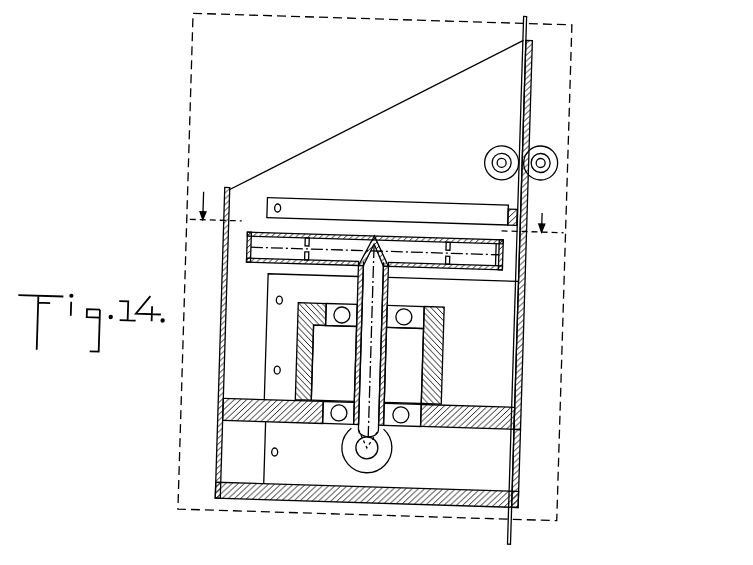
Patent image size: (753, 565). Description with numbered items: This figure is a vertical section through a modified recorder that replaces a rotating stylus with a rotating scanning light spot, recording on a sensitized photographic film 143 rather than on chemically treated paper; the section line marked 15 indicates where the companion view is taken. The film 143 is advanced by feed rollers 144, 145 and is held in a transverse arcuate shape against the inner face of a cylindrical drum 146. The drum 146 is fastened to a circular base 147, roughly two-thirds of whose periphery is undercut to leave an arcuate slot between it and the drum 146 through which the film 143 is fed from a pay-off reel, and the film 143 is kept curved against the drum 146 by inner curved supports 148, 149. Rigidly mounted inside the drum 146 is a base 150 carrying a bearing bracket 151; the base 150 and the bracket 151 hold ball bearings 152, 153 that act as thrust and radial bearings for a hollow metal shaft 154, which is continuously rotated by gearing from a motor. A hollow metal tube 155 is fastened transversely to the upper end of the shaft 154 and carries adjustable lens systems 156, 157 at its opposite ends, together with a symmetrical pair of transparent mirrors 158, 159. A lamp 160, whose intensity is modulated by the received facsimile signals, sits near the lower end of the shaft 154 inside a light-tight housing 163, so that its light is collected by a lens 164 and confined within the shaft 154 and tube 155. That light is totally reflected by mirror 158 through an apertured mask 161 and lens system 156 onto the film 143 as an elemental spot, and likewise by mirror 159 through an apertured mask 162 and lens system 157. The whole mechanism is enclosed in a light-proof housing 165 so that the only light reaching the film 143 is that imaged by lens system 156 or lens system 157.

The section line 15- 15 is at (377, 204).
The film 143 is at (520, 10).
The feed roller 144 is at (491, 146).
The feed roller 145 is at (552, 154).
The cylindrical drum 146 is at (525, 432).
The circular base 147 is at (318, 492).
The inner curved support 148 is at (512, 454).
The inner curved support 149 is at (503, 211).
The base 150 is at (476, 402).
The bearing bracket 151 is at (447, 350).
The ball bearing 152 is at (339, 424).
The ball bearing 153 is at (354, 304).
The hollow metal shaft 154 is at (366, 362).
The hollow metal tube 155 is at (334, 253).
The lens system 156 is at (492, 260).
The lens system 157 is at (247, 246).
The transparent mirror 158 is at (366, 230).
The transparent mirror 159 is at (381, 248).
The lamp 160 is at (385, 452).
The apertured mask 161 is at (375, 241).
The apertured mask 162 is at (307, 234).
The light-tight housing 163 is at (391, 470).
The lens 164 is at (392, 394).
The light-proof housing 165 is at (567, 351).